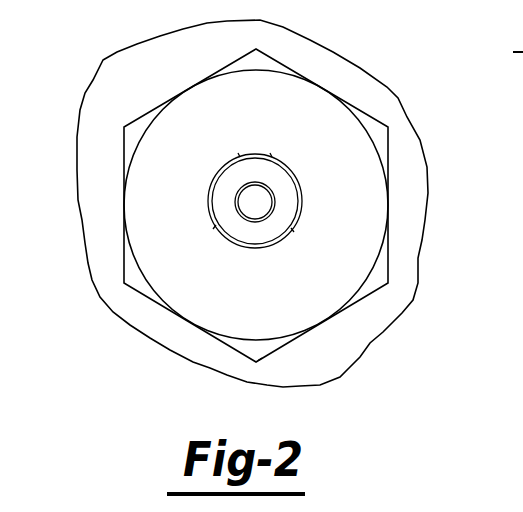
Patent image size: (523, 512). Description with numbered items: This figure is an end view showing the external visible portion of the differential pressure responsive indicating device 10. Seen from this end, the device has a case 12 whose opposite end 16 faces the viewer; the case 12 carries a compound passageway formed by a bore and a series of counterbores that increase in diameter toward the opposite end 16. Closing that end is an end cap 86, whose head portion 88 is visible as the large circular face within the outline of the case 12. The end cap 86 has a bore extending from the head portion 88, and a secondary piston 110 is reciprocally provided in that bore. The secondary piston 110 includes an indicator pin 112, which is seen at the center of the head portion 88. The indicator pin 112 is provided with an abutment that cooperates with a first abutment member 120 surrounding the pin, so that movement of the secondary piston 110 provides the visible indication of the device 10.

The differential pressure responsive indicating device 10 is at (398, 78).
The case 12 is at (367, 349).
The opposite end 16 is at (335, 366).
The end cap 86 is at (389, 219).
The head portion 88 is at (365, 190).
The secondary piston 110 is at (253, 223).
The indicator pin 112 is at (263, 213).
The first abutment member 120 is at (267, 178).